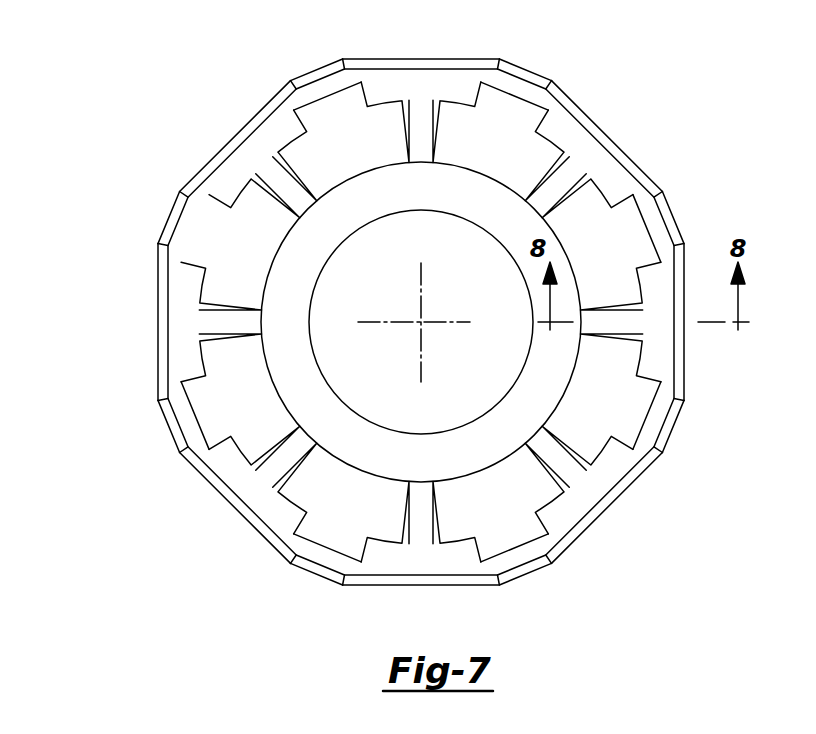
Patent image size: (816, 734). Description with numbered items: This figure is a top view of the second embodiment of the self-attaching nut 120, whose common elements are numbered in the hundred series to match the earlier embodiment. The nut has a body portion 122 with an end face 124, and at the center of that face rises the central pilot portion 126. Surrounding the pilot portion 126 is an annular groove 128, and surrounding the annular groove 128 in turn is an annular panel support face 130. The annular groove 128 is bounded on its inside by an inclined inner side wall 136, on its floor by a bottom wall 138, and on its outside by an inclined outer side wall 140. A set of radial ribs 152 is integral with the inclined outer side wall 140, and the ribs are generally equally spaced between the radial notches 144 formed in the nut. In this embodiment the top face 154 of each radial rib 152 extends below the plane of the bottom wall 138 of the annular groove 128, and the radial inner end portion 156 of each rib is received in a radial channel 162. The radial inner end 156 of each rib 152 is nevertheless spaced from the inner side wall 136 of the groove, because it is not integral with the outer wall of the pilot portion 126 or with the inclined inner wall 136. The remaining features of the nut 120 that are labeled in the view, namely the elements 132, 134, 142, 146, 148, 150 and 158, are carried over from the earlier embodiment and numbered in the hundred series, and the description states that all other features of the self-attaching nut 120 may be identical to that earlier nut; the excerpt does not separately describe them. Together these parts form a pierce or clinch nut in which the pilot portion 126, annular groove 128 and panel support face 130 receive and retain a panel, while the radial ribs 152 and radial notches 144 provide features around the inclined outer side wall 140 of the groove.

The self-attaching nut 120 is at (598, 117).
The body portion 122 is at (96, 322).
The end face 124 is at (603, 162).
The central pilot portion 126 is at (421, 322).
The annular groove 128 is at (327, 133).
The annular panel support face 130 is at (424, 62).
The radial slit 132 is at (406, 197).
The central bore 134 is at (524, 262).
The inner side wall 136 is at (505, 183).
The bottom wall 138 is at (239, 425).
The inclined outer side wall 140 is at (418, 311).
The side wall of shell 142 is at (158, 317).
The radial notches 144 is at (634, 394).
The slot corner 146 is at (427, 367).
The projection 148 is at (652, 226).
The chamfered corner 150 is at (319, 580).
The radial ribs 152 is at (407, 325).
The top face 154 is at (221, 326).
The radial inner end portion 156 is at (539, 438).
The upper slit edge 158 is at (203, 310).
The radial channel 162 is at (540, 215).